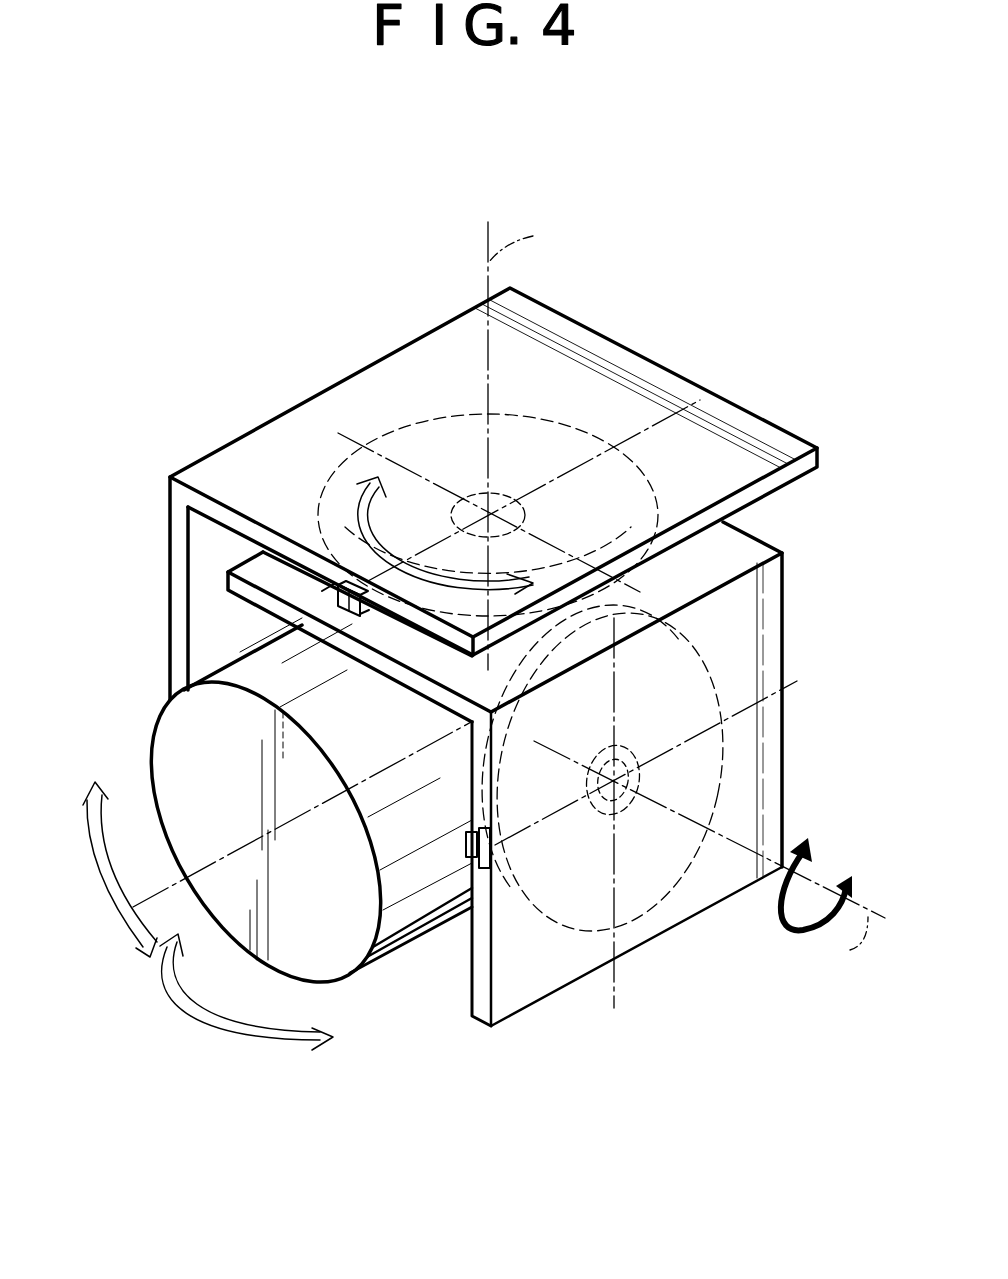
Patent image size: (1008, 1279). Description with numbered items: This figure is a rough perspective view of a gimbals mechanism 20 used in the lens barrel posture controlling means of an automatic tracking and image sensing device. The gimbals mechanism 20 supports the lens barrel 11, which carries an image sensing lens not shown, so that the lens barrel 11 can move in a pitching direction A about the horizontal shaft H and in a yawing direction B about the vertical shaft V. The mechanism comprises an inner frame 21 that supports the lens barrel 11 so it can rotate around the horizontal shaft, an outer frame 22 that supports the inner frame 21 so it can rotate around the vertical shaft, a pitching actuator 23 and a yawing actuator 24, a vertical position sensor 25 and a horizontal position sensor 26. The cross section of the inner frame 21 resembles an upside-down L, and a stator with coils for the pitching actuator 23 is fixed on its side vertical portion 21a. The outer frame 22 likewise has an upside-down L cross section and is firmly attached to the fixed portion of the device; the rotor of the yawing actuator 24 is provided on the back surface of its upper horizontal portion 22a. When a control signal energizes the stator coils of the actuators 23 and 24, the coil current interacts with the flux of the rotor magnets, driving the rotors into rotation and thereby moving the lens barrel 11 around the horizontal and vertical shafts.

The gimbals mechanism 20 is at (714, 262).
The outer frame 22 is at (613, 362).
The upper horizontal portion of the outer frame 22a is at (750, 430).
The yawing actuator 24 is at (393, 447).
The inner frame 21 is at (683, 902).
The vertical portion of the inner frame 21a is at (750, 550).
The pitching actuator 23 is at (707, 781).
The vertical position sensor 25 is at (468, 832).
The horizontal position sensor 26 is at (335, 604).
The lens barrel 11 is at (263, 937).